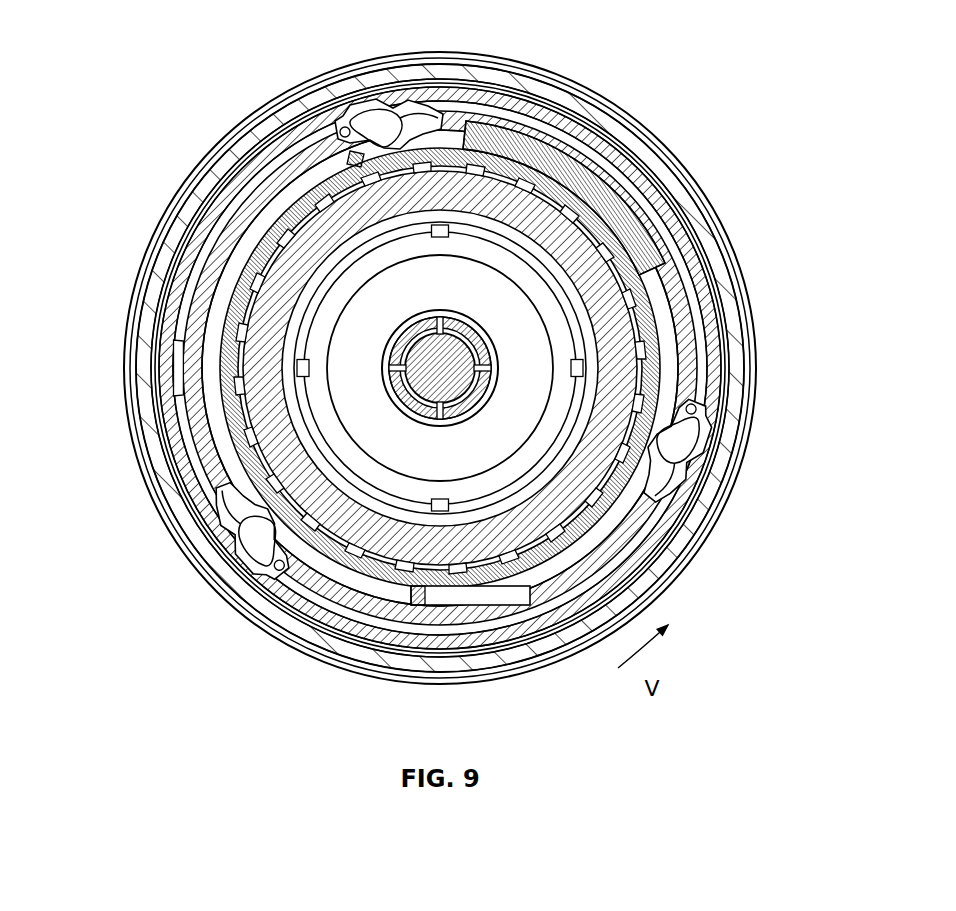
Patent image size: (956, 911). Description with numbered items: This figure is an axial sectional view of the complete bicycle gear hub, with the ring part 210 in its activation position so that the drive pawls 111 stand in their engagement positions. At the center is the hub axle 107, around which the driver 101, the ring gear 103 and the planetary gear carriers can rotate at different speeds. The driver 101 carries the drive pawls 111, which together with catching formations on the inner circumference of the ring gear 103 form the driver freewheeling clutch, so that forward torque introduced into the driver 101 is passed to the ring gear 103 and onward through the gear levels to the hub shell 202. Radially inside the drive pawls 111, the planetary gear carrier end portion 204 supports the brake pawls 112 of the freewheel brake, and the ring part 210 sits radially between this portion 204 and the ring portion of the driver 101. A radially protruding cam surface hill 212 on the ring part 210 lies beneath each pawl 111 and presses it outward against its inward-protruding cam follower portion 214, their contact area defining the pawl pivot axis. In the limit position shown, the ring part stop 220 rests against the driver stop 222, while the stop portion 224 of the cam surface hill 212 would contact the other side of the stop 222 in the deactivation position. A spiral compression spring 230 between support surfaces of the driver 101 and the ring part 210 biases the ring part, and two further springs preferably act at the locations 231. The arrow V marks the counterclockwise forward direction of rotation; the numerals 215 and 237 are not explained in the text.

The driver 101 is at (662, 487).
The ring gear 103 is at (687, 237).
The hub axle 107 is at (660, 207).
The drive pawls 111 is at (390, 130).
The brake pawls 112 is at (440, 368).
The hub shell 202 is at (657, 160).
The planetary gear carrier end portion 204 is at (320, 497).
The ring part 210 is at (357, 563).
The cam surface hill 212 is at (345, 160).
The cam follower portion 214 is at (382, 135).
The ring 215 is at (336, 125).
The stop of the ring part 220 is at (200, 242).
The stop of the driver 222 is at (247, 247).
The stop portion of the cam surface hill 224 is at (358, 160).
The compression spring 230 is at (562, 190).
The locations for further compression springs 231 is at (520, 577).
The annular gap 237 is at (213, 343).